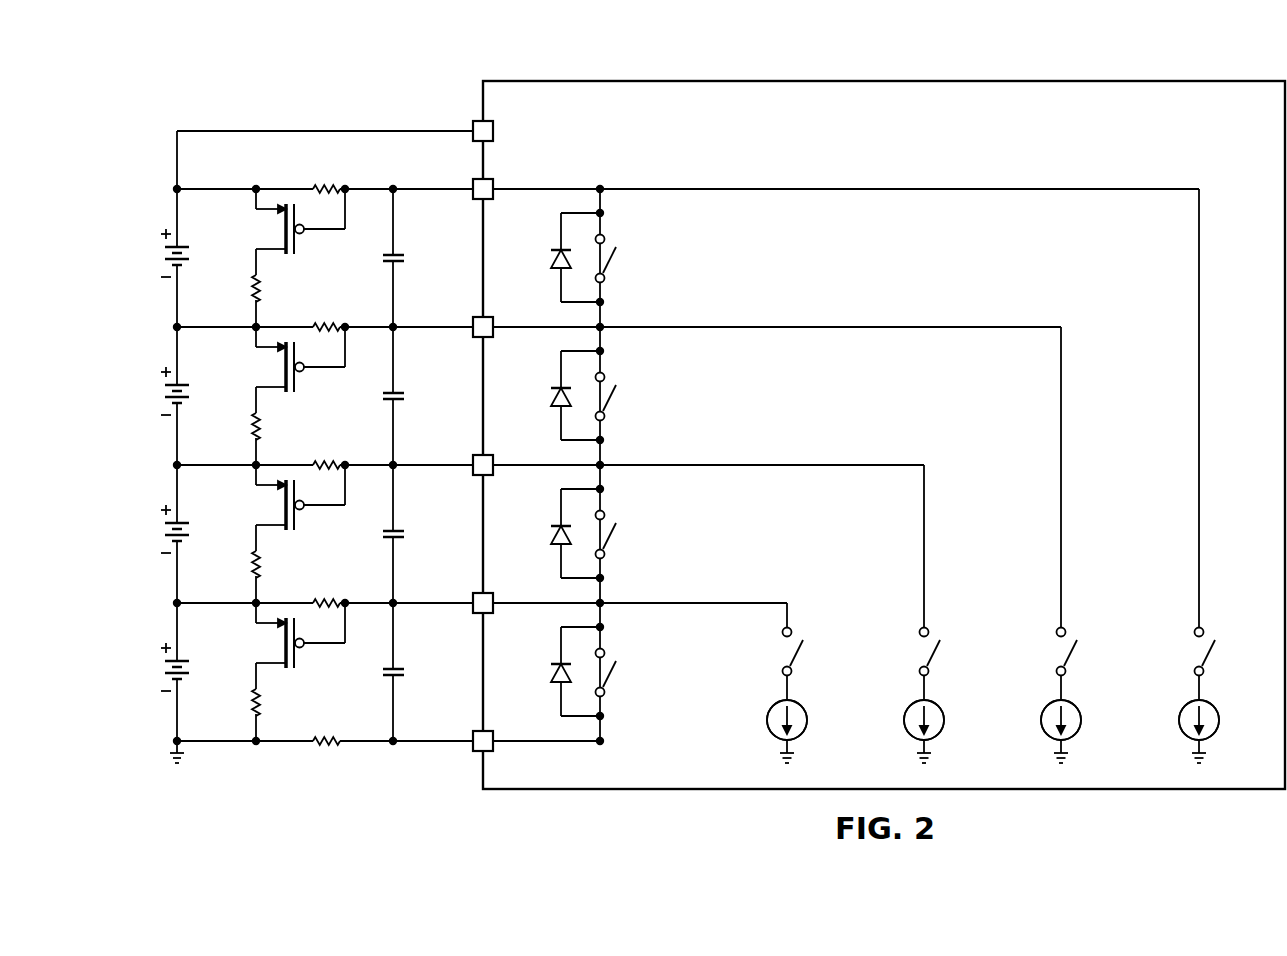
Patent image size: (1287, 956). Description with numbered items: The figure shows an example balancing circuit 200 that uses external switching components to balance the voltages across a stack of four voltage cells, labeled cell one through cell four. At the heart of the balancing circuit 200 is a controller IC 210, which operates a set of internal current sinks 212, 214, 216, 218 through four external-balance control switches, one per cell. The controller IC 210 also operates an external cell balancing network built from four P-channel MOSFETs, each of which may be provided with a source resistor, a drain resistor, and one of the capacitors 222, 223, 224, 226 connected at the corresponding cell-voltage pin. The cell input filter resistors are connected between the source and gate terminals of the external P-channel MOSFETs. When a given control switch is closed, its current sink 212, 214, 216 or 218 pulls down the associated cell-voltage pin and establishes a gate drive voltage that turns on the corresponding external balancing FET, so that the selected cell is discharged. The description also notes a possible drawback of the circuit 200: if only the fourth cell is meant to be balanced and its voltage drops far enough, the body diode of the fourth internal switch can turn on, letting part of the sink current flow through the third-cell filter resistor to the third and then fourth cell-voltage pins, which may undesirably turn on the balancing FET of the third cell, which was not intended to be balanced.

The balancing circuit 200 is at (384, 72).
The controller IC 210 is at (1170, 78).
The current sink 212 is at (805, 733).
The current sink 214 is at (942, 733).
The current sink 216 is at (1079, 733).
The current sink 218 is at (1217, 733).
The capacitor 222 is at (405, 672).
The capacitor 223 is at (405, 533).
The capacitor 224 is at (405, 396).
The capacitor 226 is at (405, 258).